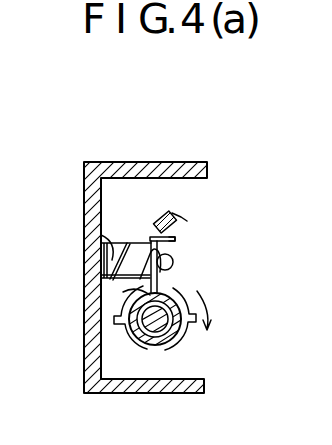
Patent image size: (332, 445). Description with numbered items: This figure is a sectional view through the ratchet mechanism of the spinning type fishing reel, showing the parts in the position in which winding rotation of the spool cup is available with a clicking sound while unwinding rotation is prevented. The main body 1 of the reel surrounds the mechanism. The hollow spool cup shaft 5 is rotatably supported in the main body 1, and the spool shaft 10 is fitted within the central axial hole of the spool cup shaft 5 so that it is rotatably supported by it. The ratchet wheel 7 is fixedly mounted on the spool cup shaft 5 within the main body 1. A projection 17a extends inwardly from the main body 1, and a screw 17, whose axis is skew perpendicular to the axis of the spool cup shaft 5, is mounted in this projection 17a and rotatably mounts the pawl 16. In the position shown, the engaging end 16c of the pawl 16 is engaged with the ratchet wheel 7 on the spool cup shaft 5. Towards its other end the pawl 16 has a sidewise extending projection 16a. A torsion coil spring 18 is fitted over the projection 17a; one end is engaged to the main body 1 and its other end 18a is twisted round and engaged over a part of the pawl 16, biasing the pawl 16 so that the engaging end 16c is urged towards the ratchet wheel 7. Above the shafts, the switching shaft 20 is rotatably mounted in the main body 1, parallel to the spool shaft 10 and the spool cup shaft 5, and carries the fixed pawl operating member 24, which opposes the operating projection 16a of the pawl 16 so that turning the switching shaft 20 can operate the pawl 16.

The main body 1 is at (159, 164).
The spool cup shaft 5 is at (141, 337).
The ratchet wheel 7 is at (191, 333).
The spool shaft 10 is at (159, 327).
The pawl 16 is at (151, 238).
The sidewise extending projection 16a is at (176, 238).
The engaging end 16c is at (123, 292).
The screw 17 is at (164, 258).
The projection 17a is at (100, 234).
The torsion coil spring 18 is at (103, 262).
The other end of torsion coil spring 18a is at (173, 262).
The switching shaft 20 is at (158, 219).
The pawl operating member 24 is at (182, 217).